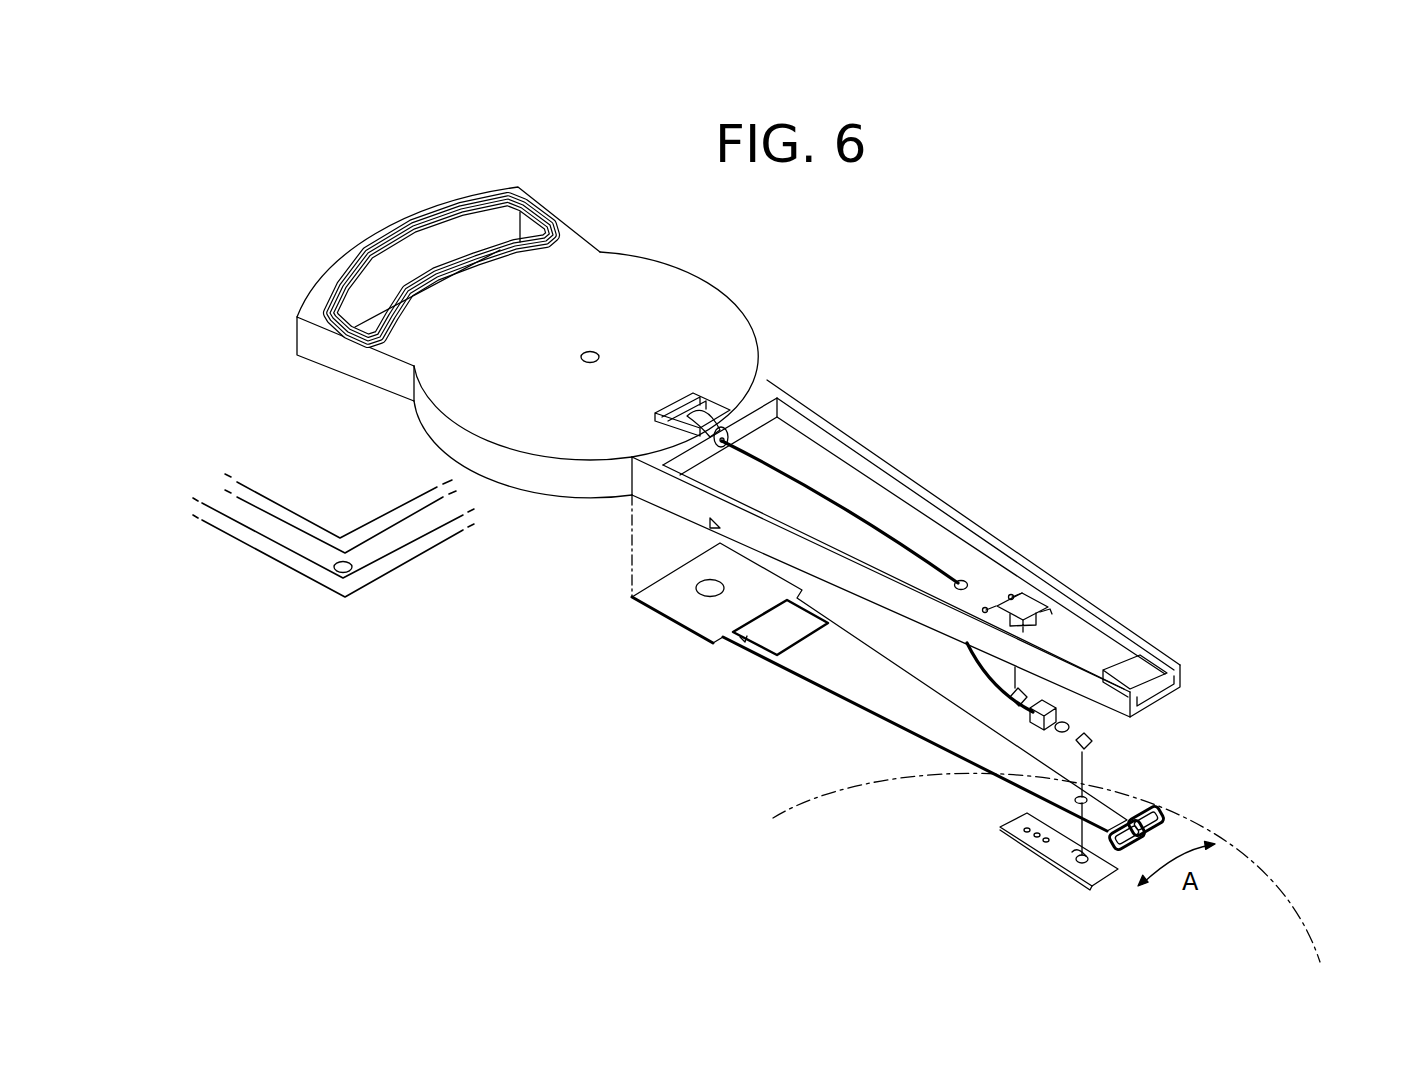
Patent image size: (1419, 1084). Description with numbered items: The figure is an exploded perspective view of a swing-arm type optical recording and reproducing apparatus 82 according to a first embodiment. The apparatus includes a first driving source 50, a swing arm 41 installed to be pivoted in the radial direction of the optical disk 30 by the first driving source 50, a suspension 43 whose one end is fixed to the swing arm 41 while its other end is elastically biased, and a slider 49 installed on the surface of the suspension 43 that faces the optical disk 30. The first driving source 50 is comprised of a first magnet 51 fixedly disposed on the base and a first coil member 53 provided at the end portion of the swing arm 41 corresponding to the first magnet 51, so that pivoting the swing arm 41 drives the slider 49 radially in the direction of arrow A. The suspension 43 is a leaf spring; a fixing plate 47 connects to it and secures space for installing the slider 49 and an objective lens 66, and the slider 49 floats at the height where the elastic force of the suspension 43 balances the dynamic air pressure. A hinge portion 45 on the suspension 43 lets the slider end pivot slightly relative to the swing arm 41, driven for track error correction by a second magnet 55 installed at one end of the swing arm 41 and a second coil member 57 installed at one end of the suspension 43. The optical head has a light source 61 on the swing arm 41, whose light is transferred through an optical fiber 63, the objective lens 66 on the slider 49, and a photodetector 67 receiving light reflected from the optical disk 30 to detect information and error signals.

The optical disk 30 is at (1307, 878).
The swing arm 41 is at (940, 503).
The suspension 43 is at (900, 700).
The hinge portion 45 is at (740, 637).
The fixing plate 47 is at (1022, 840).
The slider 49 is at (1085, 886).
The first driving source 50 is at (266, 576).
The first magnet 51 is at (385, 516).
The first coil member 53 is at (336, 287).
The second magnet 55 is at (1140, 670).
The second coil member 57 is at (1153, 822).
The light source 61 is at (707, 410).
The optical fiber 63 is at (860, 513).
The objective lens 66 is at (1076, 862).
The photodetector 67 is at (1017, 603).
The swing-arm type optical recording and reproducing apparatus 82 is at (1265, 169).